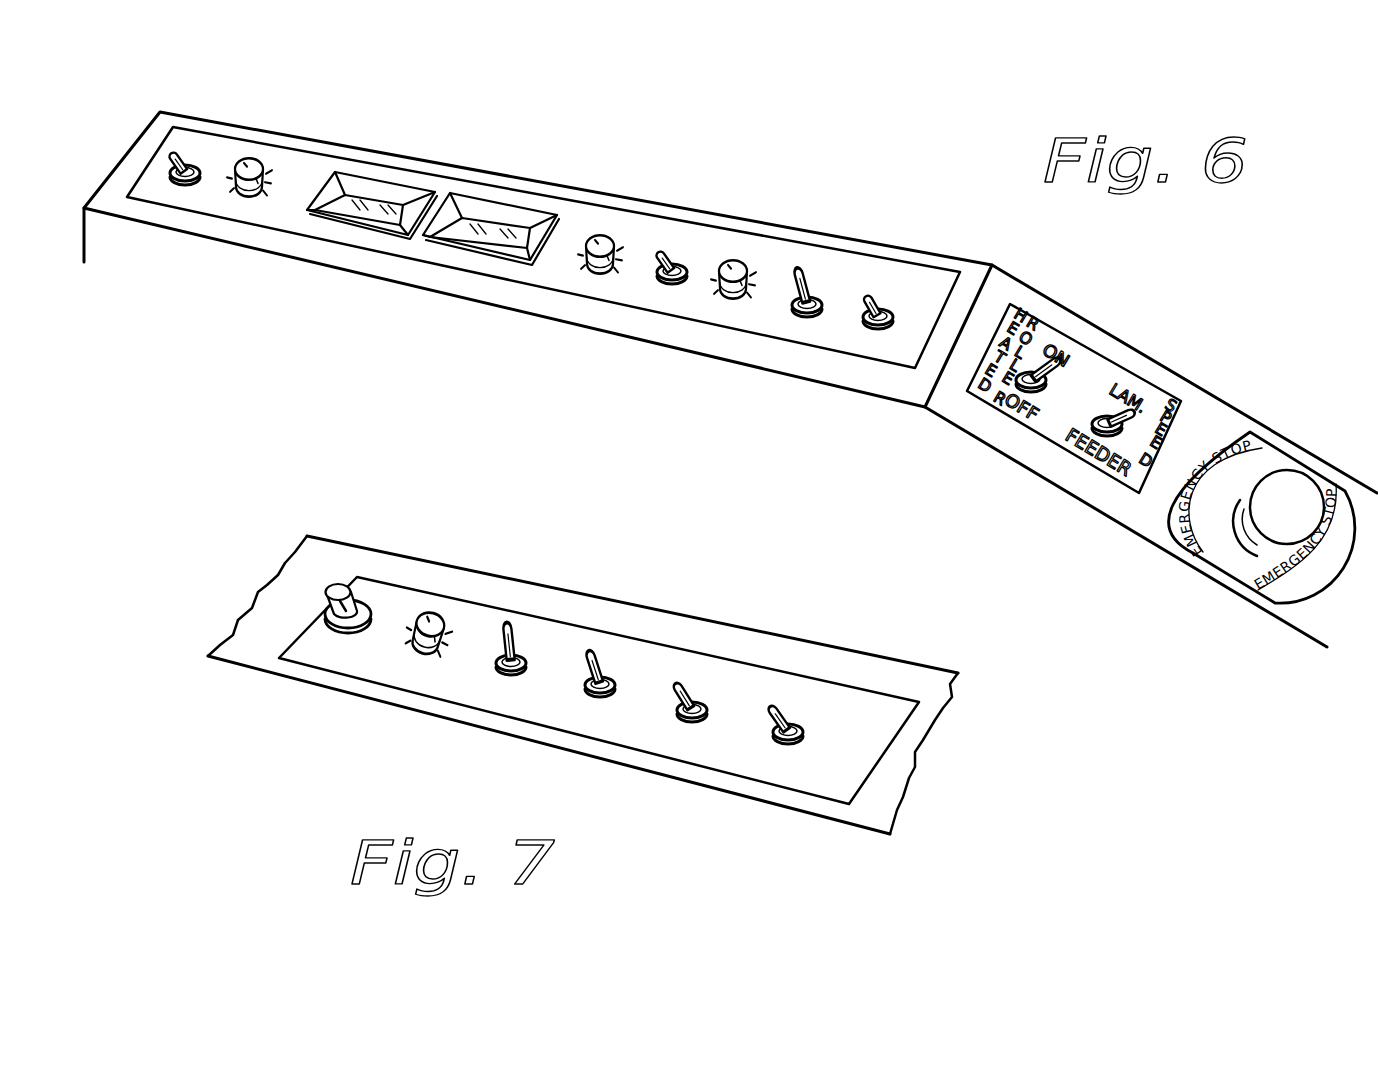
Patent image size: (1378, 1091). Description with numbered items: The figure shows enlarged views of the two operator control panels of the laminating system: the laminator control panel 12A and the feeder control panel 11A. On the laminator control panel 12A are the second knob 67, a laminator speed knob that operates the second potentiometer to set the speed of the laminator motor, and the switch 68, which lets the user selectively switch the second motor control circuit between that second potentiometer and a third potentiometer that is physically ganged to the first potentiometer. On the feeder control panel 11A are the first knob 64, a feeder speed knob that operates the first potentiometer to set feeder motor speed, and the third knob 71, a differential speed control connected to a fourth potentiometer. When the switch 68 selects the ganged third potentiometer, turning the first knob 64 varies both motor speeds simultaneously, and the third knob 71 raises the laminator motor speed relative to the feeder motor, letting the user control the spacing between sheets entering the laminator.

In FIG. 6, the laminator control panel 12A is at (316, 140).
In FIG. 6, the second knob 67 is at (737, 257).
In FIG. 6, the switch 68 is at (1103, 407).
In FIG. 7, the feeder control panel 11A is at (455, 570).
In FIG. 7, the first knob 64 is at (433, 617).
In FIG. 7, the third knob 71 is at (328, 607).